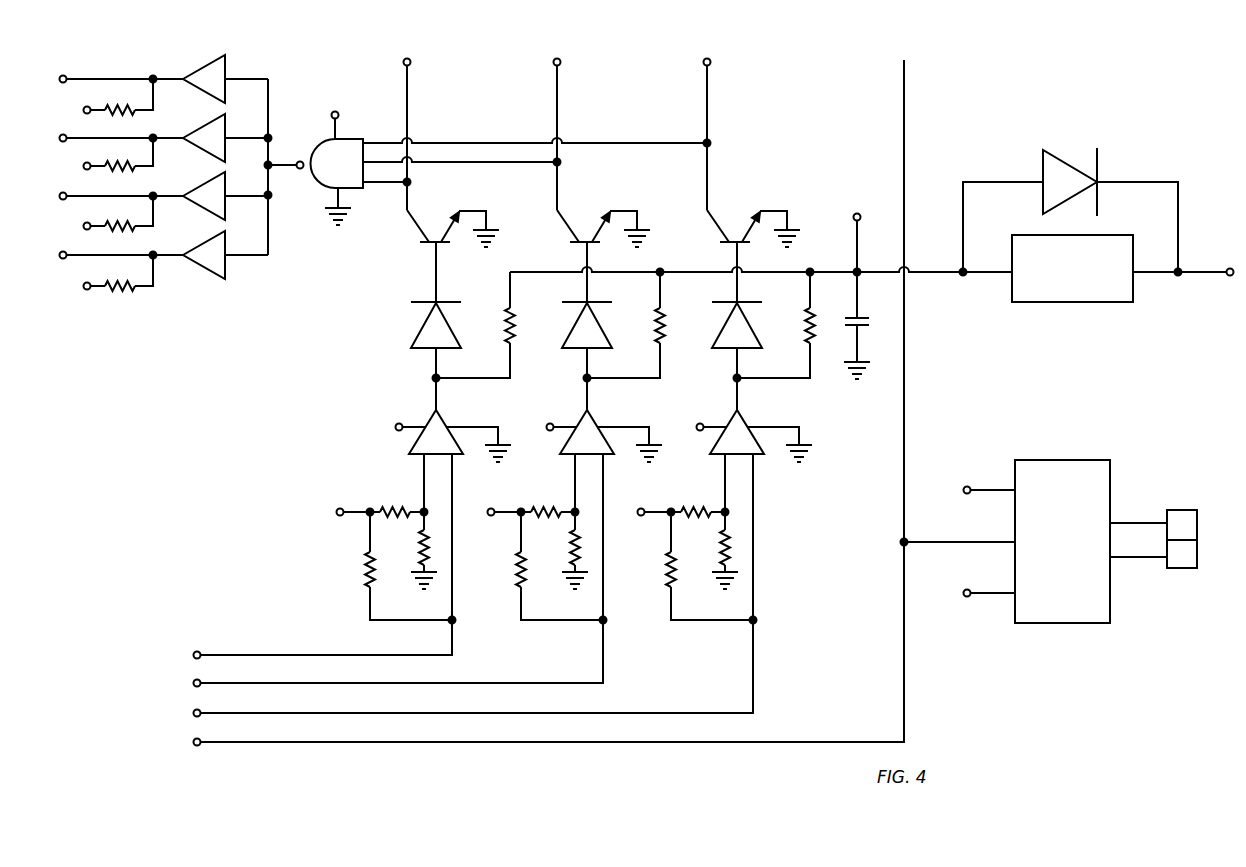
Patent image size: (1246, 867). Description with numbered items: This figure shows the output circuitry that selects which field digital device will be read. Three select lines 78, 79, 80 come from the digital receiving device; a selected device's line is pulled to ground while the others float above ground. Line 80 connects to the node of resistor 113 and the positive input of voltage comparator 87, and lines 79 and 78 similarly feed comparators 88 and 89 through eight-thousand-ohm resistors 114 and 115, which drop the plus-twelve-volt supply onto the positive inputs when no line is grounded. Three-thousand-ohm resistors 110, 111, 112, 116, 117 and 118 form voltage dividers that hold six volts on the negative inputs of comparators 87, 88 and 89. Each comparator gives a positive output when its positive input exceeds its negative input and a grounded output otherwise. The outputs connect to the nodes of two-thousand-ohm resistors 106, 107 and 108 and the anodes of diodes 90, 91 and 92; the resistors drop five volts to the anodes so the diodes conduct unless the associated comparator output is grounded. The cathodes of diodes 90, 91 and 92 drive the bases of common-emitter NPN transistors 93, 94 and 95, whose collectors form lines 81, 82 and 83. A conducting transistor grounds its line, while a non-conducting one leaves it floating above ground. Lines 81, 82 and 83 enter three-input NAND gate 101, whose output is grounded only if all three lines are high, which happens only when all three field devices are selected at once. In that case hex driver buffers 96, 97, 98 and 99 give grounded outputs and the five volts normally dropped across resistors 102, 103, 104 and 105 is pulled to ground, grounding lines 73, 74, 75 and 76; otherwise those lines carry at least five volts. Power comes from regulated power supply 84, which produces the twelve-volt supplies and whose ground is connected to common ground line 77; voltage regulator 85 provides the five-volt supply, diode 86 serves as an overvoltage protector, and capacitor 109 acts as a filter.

The line 73 is at (111, 245).
The line 74 is at (111, 186).
The line 75 is at (111, 128).
The line 76 is at (111, 69).
The line 77 is at (538, 407).
The line 78 is at (458, 672).
The line 79 is at (383, 657).
The line 80 is at (307, 643).
The line 81 is at (421, 132).
The line 82 is at (571, 132).
The line 83 is at (721, 132).
The regulated power supply 84 is at (1057, 541).
The voltage regulator 85 is at (1129, 268).
The diode 86 is at (1071, 212).
The voltage comparator 87 is at (438, 510).
The voltage comparator 88 is at (589, 510).
The voltage comparator 89 is at (739, 510).
The diode 90 is at (436, 356).
The diode 91 is at (587, 356).
The diode 92 is at (737, 356).
The transistor 93 is at (453, 254).
The transistor 94 is at (603, 254).
The transistor 95 is at (753, 254).
The hex driver buffer 96 is at (225, 79).
The hex driver buffer 97 is at (225, 138).
The hex driver buffer 98 is at (225, 196).
The hex driver buffer 99 is at (225, 255).
The 3 input NAND gate 101 is at (487, 157).
The resistor 102 is at (105, 97).
The resistor 103 is at (105, 154).
The resistor 104 is at (105, 213).
The resistor 105 is at (105, 273).
The resistor 106 is at (475, 325).
The resistor 107 is at (626, 325).
The resistor 108 is at (776, 325).
The capacitor 109 is at (845, 284).
The resistor 110 is at (360, 504).
The resistor 111 is at (511, 504).
The resistor 112 is at (661, 504).
The resistor 113 is at (395, 568).
The resistor 114 is at (546, 568).
The resistor 115 is at (696, 568).
The resistor 116 is at (414, 550).
The resistor 117 is at (565, 550).
The resistor 118 is at (715, 550).